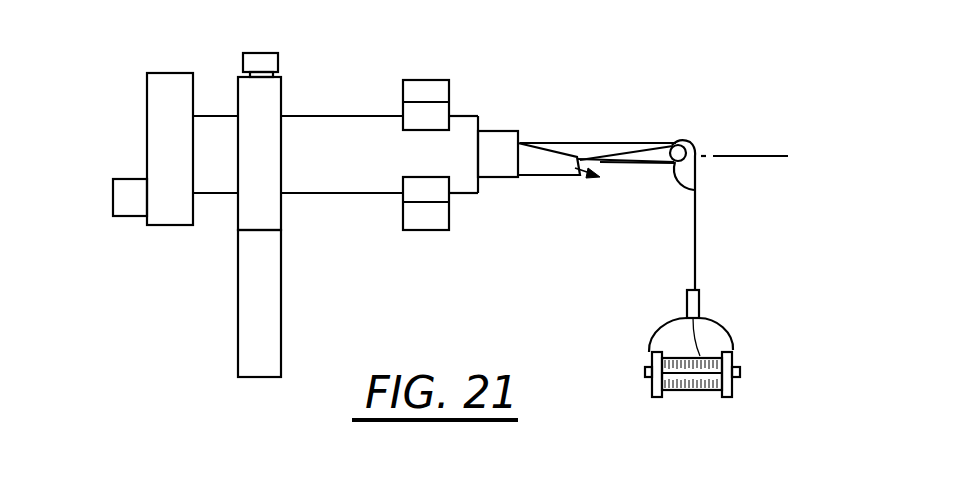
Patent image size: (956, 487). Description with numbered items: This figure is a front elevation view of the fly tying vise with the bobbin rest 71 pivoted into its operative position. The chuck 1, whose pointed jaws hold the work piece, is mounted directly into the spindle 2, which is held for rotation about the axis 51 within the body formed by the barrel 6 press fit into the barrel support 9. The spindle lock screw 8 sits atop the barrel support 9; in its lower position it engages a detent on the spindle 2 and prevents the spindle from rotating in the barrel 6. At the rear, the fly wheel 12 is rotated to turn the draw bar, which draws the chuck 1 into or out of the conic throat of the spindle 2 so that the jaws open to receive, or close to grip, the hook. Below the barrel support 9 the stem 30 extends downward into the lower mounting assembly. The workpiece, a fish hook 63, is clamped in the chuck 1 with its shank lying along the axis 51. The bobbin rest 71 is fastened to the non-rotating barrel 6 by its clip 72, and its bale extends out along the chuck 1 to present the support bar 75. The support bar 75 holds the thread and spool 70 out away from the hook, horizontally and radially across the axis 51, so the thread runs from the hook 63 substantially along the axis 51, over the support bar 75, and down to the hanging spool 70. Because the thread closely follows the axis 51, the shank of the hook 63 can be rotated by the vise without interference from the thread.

The chuck 1 is at (545, 175).
The spindle 2 is at (497, 140).
The barrel 6 is at (355, 125).
The spindle lock screw 8 is at (258, 62).
The barrel support 9 is at (276, 98).
The fly wheel 12 is at (158, 90).
The stem 30 is at (267, 312).
The axis 51 is at (770, 156).
The fish hook 63 is at (605, 151).
The spool 70 is at (700, 390).
The bobbin rest 71 is at (660, 167).
The clip 72 is at (430, 88).
The support bar 75 is at (697, 190).